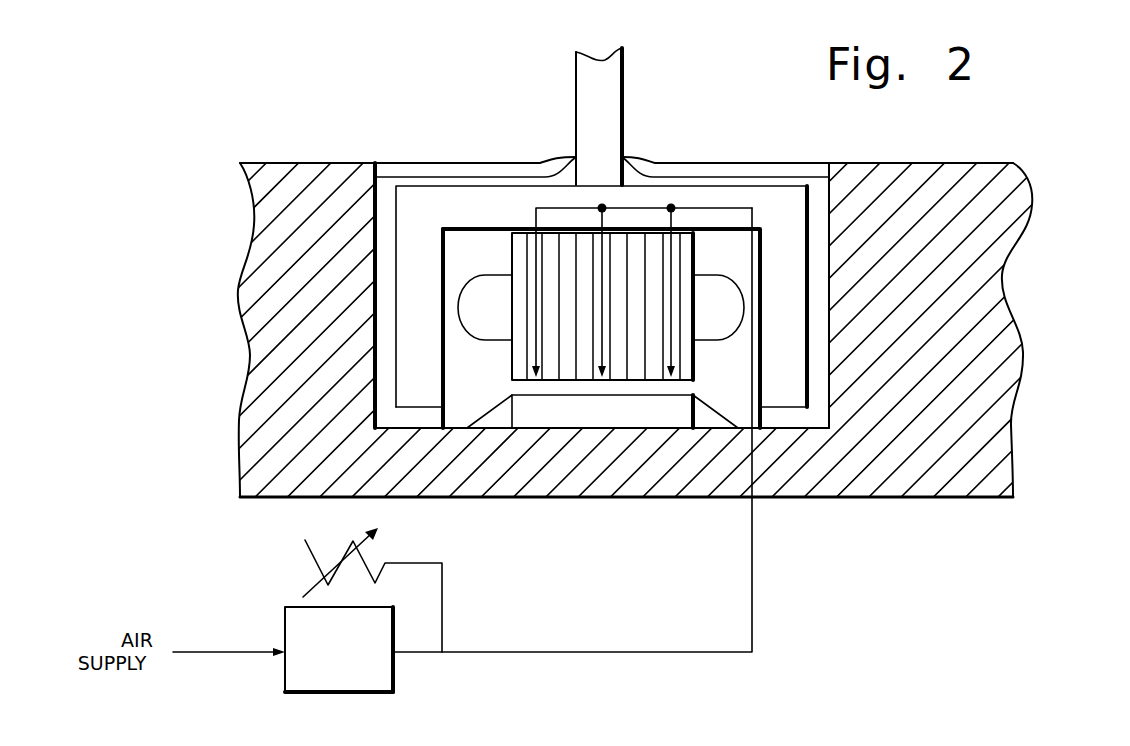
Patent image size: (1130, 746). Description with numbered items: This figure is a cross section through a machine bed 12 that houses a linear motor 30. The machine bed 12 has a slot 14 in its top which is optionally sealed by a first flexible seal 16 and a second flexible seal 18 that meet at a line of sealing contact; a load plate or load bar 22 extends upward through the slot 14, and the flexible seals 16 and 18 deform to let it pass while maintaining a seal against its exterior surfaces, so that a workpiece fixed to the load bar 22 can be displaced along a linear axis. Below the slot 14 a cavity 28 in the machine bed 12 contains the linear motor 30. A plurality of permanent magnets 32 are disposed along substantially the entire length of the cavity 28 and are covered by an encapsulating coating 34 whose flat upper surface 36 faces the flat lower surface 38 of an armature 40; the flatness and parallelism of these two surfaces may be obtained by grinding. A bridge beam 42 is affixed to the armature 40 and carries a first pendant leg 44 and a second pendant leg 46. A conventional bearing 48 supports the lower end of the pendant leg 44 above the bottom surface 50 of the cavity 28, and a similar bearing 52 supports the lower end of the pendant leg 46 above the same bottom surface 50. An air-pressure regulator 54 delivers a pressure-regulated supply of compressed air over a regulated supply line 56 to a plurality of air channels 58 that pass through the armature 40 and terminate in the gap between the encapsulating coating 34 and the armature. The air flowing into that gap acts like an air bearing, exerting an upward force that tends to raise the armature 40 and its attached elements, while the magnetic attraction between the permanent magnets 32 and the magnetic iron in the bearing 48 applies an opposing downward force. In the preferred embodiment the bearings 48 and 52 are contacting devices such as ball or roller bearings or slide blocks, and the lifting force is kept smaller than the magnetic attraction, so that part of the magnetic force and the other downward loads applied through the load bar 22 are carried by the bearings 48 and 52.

The machine bed 12 is at (1008, 190).
The slot 14 is at (830, 163).
The first flexible seal 16 is at (698, 172).
The second flexible seal 18 is at (463, 167).
The load bar 22 is at (607, 103).
The cavity 28 is at (386, 188).
The linear motor 30 is at (195, 207).
The permanent magnets 32 is at (548, 412).
The encapsulating coating 34 is at (515, 388).
The flat upper surface 36 is at (675, 395).
The flat lower surface 38 is at (638, 381).
The armature 40 is at (515, 253).
The bridge beam 42 is at (420, 202).
The first pendant leg 44 is at (413, 348).
The second pendant leg 46 is at (790, 325).
The bearing 48 is at (412, 427).
The bottom surface 50 is at (438, 408).
The bearing 52 is at (790, 418).
The air-pressure regulator 54 is at (393, 675).
The regulated supply line 56 is at (605, 650).
The air channels 58 is at (671, 266).